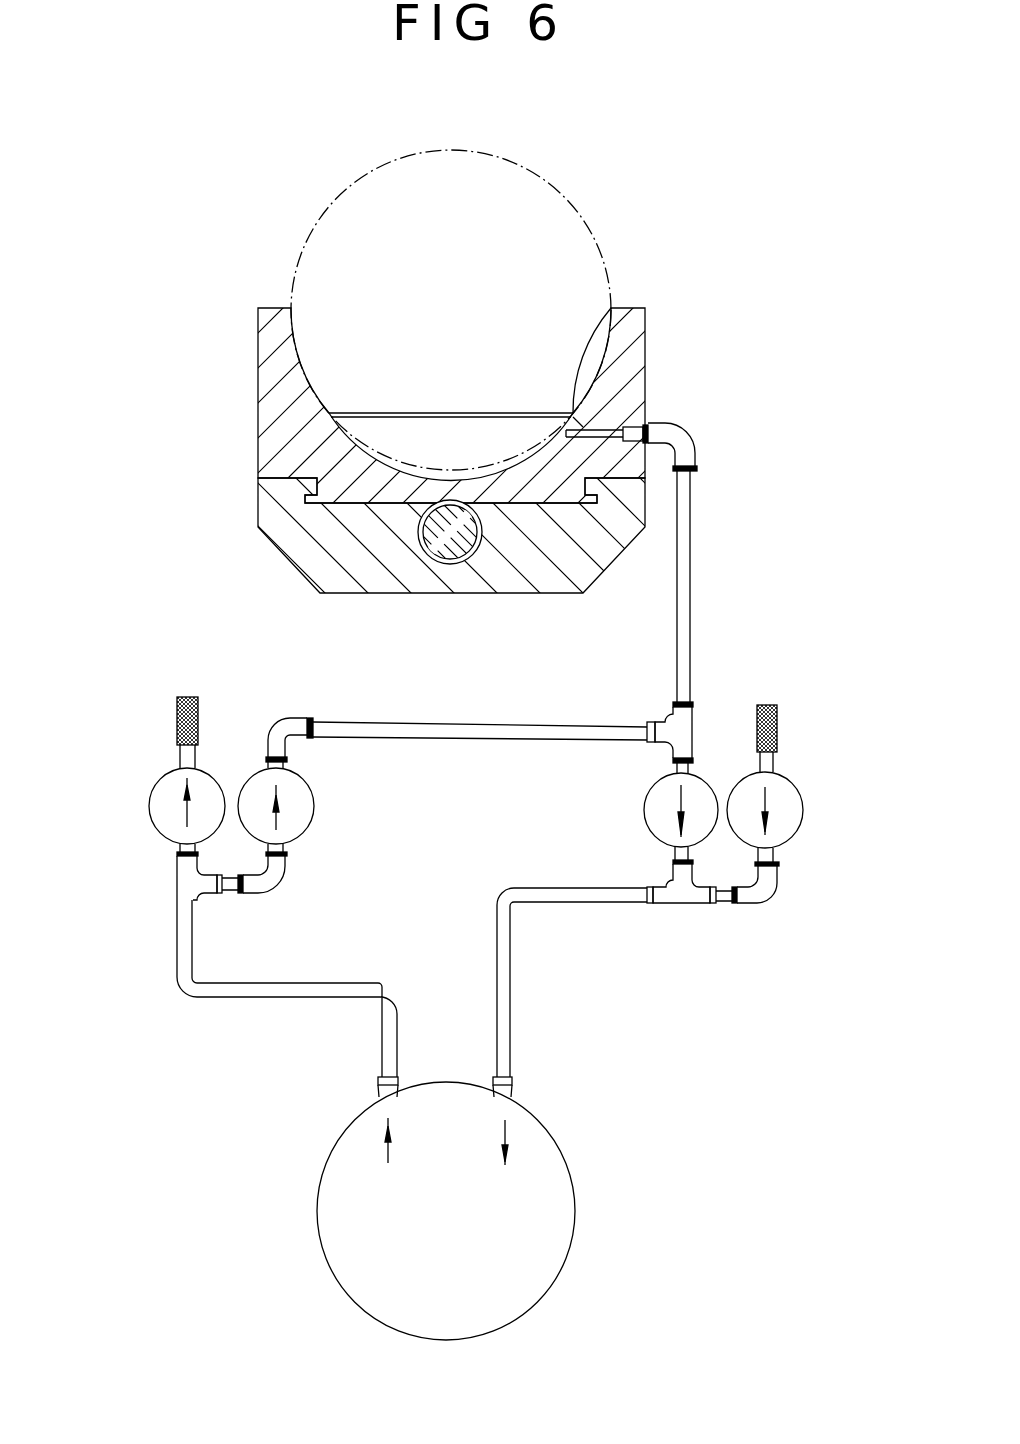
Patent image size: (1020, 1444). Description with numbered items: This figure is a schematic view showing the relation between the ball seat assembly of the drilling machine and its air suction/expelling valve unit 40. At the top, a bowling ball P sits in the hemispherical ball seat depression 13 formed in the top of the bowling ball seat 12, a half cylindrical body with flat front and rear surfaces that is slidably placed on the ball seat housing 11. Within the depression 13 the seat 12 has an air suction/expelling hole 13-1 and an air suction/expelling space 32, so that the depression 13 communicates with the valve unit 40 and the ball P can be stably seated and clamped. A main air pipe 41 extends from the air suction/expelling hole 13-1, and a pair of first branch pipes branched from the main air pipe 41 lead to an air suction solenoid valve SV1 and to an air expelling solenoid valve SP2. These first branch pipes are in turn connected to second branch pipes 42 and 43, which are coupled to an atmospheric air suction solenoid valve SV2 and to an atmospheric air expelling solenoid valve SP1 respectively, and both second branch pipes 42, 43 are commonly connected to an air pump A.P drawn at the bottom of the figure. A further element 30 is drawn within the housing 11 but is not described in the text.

The bowling ball P is at (303, 277).
The bowling ball seat 12 is at (258, 387).
The ball seat housing 11 is at (257, 504).
The hemispherical ball seat depression 13 is at (601, 362).
The air suction/expelling hole 13-1 is at (634, 427).
The pipe 30 is at (445, 545).
The air suction/expelling space 32 is at (494, 474).
The main air pipe 41 is at (685, 591).
The air suction/expelling valve unit 40 is at (753, 653).
The second branch pipe 42 is at (503, 993).
The second branch pipe 43 is at (288, 993).
The atmospheric air expelling solenoid valve SP1 is at (170, 808).
The air expelling solenoid valve SP2 is at (298, 820).
The air suction solenoid valve SV1 is at (665, 812).
The atmospheric air suction solenoid valve SV2 is at (787, 827).
The air pump A.P is at (330, 1241).